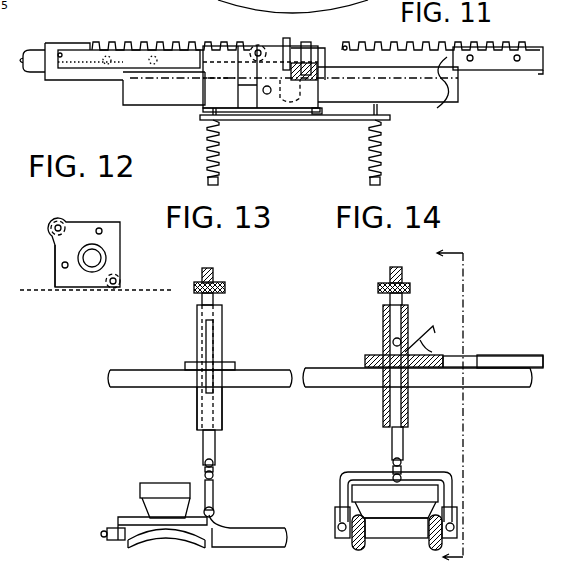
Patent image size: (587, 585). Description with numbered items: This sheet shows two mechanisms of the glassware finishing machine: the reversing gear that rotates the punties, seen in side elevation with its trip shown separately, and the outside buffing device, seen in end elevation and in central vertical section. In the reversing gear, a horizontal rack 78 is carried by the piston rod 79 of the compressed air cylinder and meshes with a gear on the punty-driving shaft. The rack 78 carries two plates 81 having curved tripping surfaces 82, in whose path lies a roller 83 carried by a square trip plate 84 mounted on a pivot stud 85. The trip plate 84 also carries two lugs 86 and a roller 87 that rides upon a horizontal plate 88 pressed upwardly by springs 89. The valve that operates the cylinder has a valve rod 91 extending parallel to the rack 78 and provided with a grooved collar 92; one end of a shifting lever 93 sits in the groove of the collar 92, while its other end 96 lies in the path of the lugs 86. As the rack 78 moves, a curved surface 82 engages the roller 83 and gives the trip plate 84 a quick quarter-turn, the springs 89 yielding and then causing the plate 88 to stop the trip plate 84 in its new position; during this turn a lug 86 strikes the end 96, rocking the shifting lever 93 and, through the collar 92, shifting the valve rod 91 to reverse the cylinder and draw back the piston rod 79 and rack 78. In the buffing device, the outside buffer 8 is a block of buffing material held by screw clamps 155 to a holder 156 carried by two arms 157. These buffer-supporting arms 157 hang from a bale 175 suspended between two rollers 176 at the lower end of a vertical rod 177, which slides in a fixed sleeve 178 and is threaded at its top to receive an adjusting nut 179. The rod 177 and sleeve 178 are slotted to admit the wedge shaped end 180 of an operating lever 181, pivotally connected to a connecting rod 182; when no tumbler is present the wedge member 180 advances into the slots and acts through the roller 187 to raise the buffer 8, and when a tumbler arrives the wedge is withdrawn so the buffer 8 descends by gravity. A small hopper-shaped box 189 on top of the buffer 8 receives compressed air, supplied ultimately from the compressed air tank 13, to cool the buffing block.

In FIG. 13, the outside buffer 8 is at (187, 534).
In FIG. 14, the outside buffer 8 is at (402, 533).
In FIG. 14, the compressed air tank 13 is at (465, 407).
In FIG. 11, the horizontal rack 78 is at (176, 48).
In FIG. 11, the piston rod 79 is at (33, 73).
In FIG. 11, the plates 81 is at (101, 49).
In FIG. 11, the curved tripping surfaces 82 is at (181, 73).
In FIG. 11, the roller 83 is at (257, 45).
In FIG. 12, the roller 83 is at (66, 211).
In FIG. 11, the square trip plate 84 is at (260, 77).
In FIG. 12, the square trip plate 84 is at (62, 246).
In FIG. 11, the pivot stud 85 is at (290, 102).
In FIG. 12, the pivot stud 85 is at (100, 256).
In FIG. 11, the lugs 86 is at (266, 95).
In FIG. 12, the lugs 86 is at (101, 229).
In FIG. 11, the roller 87 is at (316, 115).
In FIG. 12, the roller 87 is at (118, 284).
In FIG. 11, the horizontal plate 88 is at (344, 121).
In FIG. 11, the springs 89 is at (210, 153).
In FIG. 11, the valve rod 91 is at (80, 60).
In FIG. 11, the grooved collar 92 is at (309, 42).
In FIG. 11, the shifting lever 93 is at (306, 79).
In FIG. 11, the end of shifting lever 96 is at (287, 38).
In FIG. 13, the screw clamps 155 is at (112, 541).
In FIG. 13, the holder 156 is at (135, 518).
In FIG. 13, the arms 157 is at (263, 518).
In FIG. 14, the arms 157 is at (352, 540).
In FIG. 13, the bale 175 is at (215, 491).
In FIG. 14, the bale 175 is at (430, 472).
In FIG. 13, the rollers 176 is at (216, 466).
In FIG. 14, the rollers 176 is at (393, 462).
In FIG. 13, the vertical rod 177 is at (206, 437).
In FIG. 14, the vertical rod 177 is at (403, 441).
In FIG. 13, the fixed sleeve 178 is at (200, 406).
In FIG. 14, the fixed sleeve 178 is at (383, 406).
In FIG. 13, the adjusting nut 179 is at (222, 287).
In FIG. 14, the adjusting nut 179 is at (378, 288).
In FIG. 13, the wedge shaped end 180 is at (200, 341).
In FIG. 14, the wedge shaped end 180 is at (433, 340).
In FIG. 13, the operating lever 181 is at (214, 362).
In FIG. 14, the operating lever 181 is at (455, 356).
In FIG. 14, the connecting rod 182 is at (512, 351).
In FIG. 14, the roller 187 is at (393, 341).
In FIG. 13, the hopper-shaped box 189 is at (168, 477).
In FIG. 14, the hopper-shaped box 189 is at (365, 490).